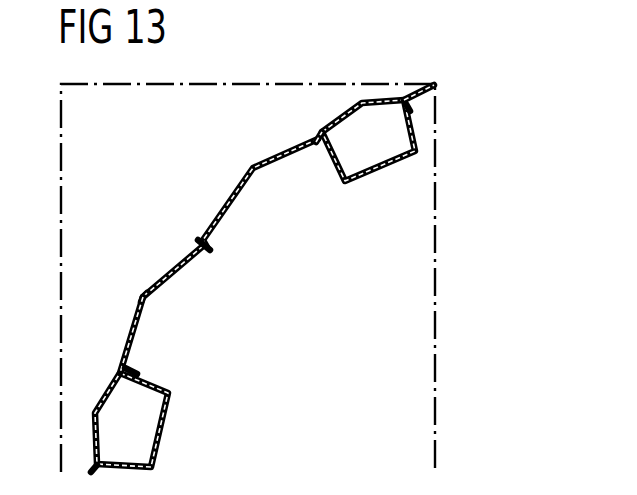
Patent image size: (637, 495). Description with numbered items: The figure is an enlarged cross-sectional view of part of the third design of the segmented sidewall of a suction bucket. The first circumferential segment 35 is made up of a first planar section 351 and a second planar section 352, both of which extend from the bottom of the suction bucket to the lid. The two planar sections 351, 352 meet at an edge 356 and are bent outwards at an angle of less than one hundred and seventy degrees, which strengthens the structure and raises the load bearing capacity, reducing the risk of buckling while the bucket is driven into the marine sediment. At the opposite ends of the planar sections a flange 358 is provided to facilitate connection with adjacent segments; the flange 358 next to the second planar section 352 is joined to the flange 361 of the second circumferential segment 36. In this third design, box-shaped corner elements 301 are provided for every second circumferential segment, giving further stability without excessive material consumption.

The second circumferential segment 36 is at (250, 160).
The first circumferential segment 35 is at (175, 281).
The box-shaped corner element 301 is at (410, 134).
The flange 361 is at (310, 152).
The flange 358 is at (206, 250).
The second planar section 352 is at (170, 275).
The edge 356 is at (148, 301).
The first planar section 351 is at (131, 340).